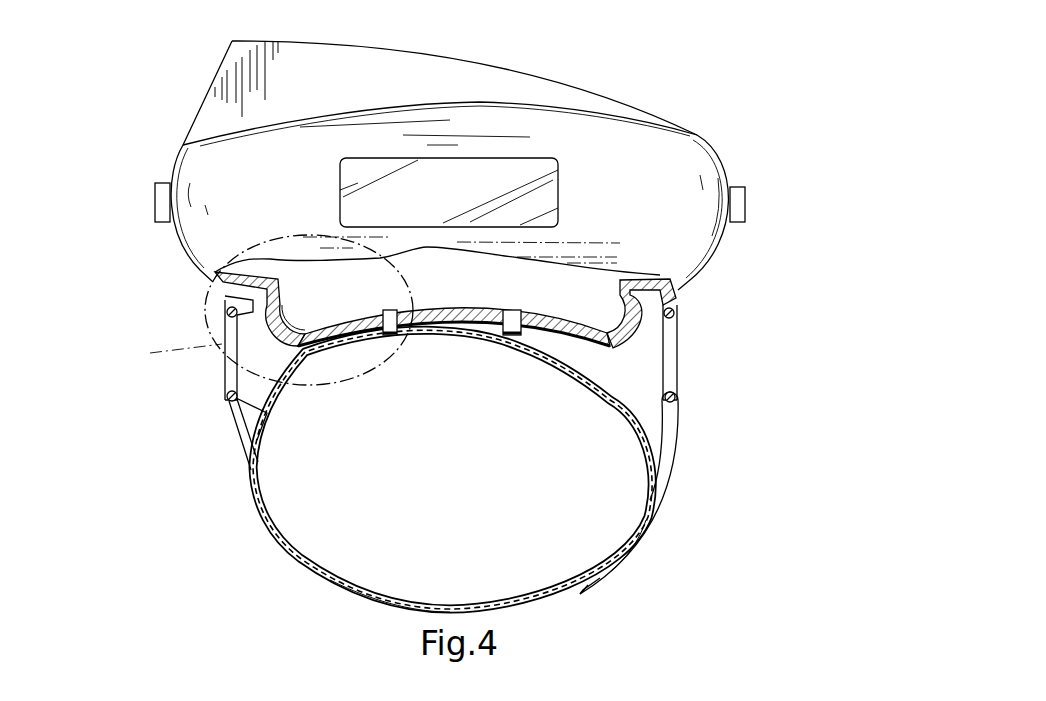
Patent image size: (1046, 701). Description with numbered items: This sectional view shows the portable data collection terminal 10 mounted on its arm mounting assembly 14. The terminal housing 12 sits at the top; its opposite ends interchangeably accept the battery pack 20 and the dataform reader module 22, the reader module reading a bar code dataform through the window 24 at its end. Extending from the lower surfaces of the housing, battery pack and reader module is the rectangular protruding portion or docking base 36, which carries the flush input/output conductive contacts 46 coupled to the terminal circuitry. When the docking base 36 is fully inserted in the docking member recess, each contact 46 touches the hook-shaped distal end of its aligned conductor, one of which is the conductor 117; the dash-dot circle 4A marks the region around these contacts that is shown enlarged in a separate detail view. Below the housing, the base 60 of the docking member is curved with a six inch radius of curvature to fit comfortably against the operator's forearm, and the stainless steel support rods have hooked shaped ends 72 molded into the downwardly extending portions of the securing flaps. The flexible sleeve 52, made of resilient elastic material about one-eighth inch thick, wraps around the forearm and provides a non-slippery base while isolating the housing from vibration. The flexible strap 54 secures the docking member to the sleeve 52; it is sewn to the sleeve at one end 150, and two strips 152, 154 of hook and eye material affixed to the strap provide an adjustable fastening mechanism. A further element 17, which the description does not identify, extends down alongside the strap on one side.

The portable data collection terminal 10 is at (138, 277).
The terminal housing 12 is at (118, 145).
The arm mounting assembly 14 is at (180, 464).
The strap 17 is at (660, 503).
The battery pack 20 is at (185, 40).
The dataform reader module 22 is at (233, 163).
The window 24 is at (417, 202).
The protruding portion or docking base 36 is at (545, 318).
The input/output conductive contacts 46 is at (397, 340).
The flexible sleeve 52 is at (612, 393).
The flexible strap 54 is at (347, 592).
The base 60 is at (578, 350).
The hooked shaped ends 72 is at (228, 347).
The conductor 117 is at (368, 316).
The strap end 150 is at (235, 424).
The strip of hook and eye material 152 is at (623, 543).
The strip of hook and eye material 154 is at (617, 567).
The detail view boundary 4A is at (222, 344).